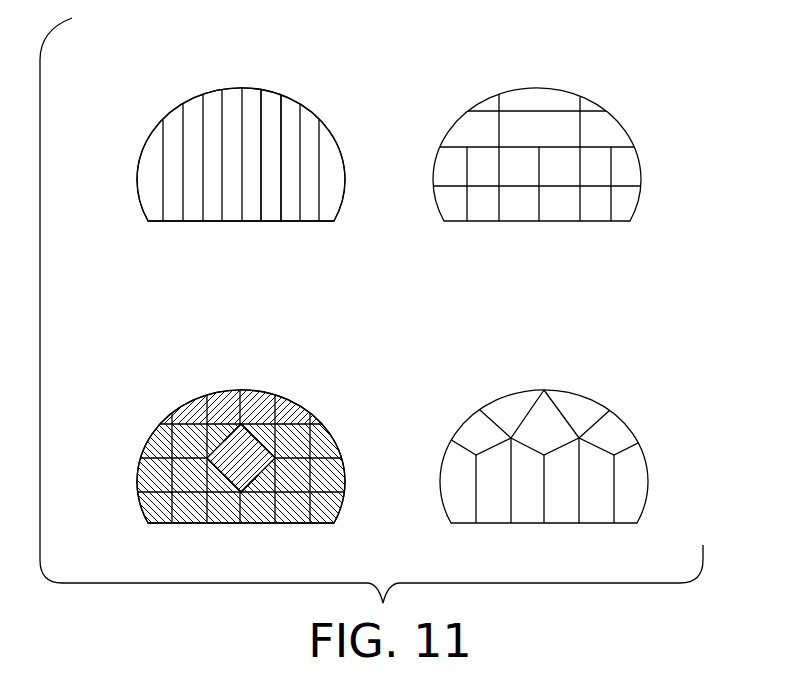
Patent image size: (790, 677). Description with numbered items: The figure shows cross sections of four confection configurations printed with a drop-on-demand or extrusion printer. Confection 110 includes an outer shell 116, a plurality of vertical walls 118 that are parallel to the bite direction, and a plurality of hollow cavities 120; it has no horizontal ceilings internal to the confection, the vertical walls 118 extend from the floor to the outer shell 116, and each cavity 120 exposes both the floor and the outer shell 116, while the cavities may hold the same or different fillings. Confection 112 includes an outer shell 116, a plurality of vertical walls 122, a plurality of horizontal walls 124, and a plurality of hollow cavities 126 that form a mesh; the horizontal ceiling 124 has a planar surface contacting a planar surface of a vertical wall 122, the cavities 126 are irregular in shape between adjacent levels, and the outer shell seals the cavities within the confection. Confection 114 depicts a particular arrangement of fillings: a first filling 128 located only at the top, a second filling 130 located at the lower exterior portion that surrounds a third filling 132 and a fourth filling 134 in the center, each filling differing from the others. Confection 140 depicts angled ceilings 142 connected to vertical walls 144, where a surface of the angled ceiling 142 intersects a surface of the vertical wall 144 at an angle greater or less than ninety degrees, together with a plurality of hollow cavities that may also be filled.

The confection 110 is at (160, 92).
The confection 112 is at (466, 90).
The confection 114 is at (170, 385).
The outer shell 116 is at (160, 127).
The vertical walls 118 is at (262, 106).
The hollow cavities 120 is at (192, 163).
The vertical walls 122 is at (468, 202).
The horizontal walls 124 is at (537, 112).
The hollow cavities 126 is at (520, 100).
The first filling 128 is at (290, 408).
The second filling 130 is at (142, 473).
The third filling 132 is at (257, 440).
The fourth filling 134 is at (223, 440).
The confection 140 is at (466, 388).
The angled ceiling 142 is at (563, 412).
The vertical walls 144 is at (615, 487).